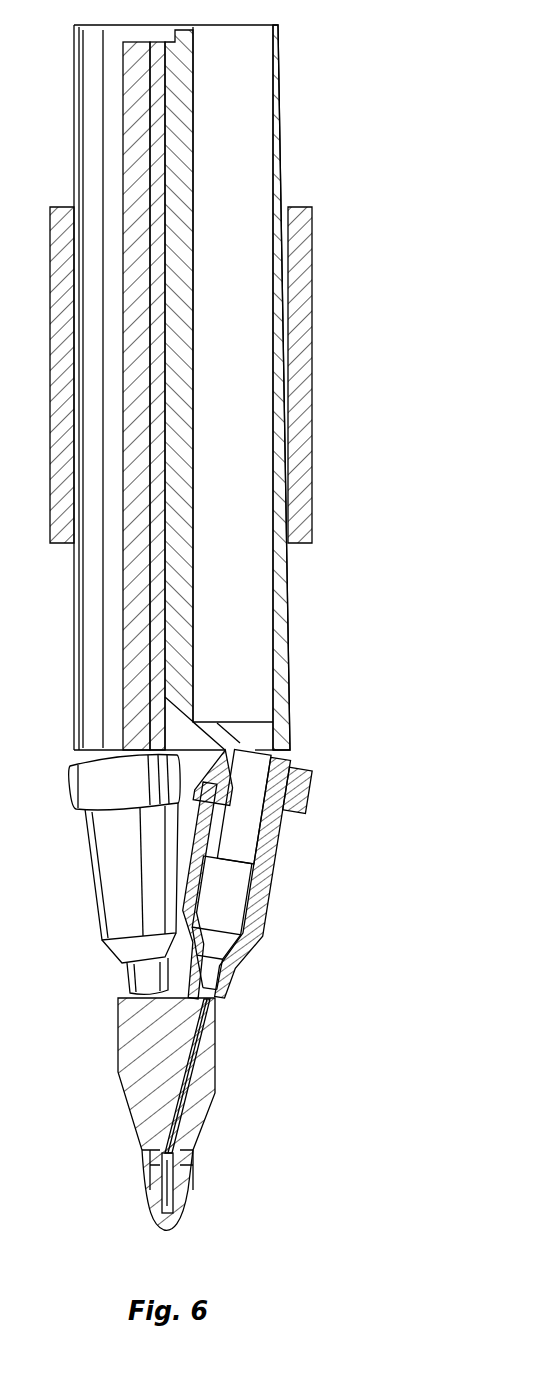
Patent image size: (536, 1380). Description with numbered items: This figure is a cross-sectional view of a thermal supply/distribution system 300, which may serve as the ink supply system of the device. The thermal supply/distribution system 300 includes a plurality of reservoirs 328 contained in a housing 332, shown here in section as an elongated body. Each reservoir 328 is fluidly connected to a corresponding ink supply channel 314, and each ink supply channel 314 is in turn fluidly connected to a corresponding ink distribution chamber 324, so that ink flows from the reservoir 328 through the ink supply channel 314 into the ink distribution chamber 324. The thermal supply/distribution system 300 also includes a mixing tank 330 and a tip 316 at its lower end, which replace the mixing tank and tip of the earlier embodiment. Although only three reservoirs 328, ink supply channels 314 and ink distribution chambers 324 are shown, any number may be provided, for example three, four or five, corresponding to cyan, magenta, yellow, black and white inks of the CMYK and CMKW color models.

The thermal supply/distribution system 300 is at (386, 80).
The reservoir 328 is at (253, 73).
The housing 332 is at (311, 264).
The ink supply channel 314 is at (92, 872).
The ink distribution chamber 324 is at (178, 1100).
The mixing tank 330 is at (160, 1173).
The tip 316 is at (173, 1227).